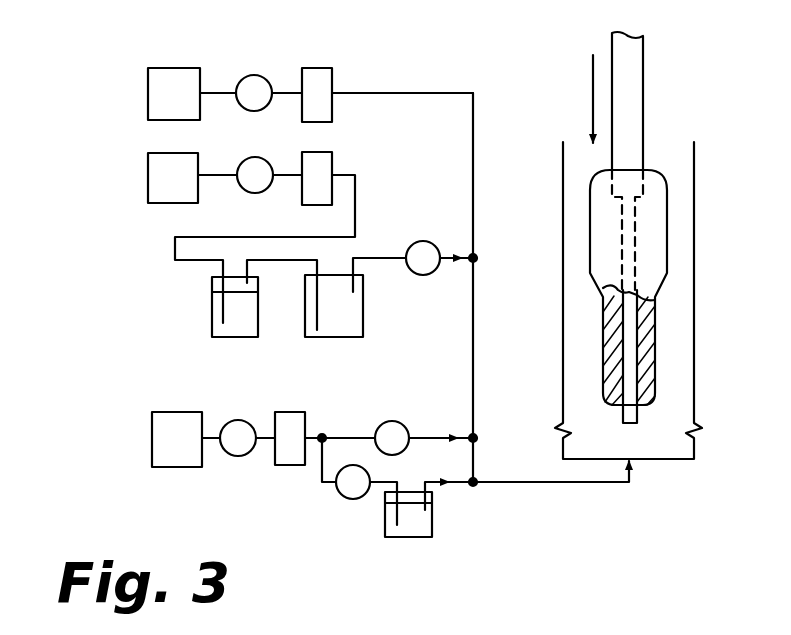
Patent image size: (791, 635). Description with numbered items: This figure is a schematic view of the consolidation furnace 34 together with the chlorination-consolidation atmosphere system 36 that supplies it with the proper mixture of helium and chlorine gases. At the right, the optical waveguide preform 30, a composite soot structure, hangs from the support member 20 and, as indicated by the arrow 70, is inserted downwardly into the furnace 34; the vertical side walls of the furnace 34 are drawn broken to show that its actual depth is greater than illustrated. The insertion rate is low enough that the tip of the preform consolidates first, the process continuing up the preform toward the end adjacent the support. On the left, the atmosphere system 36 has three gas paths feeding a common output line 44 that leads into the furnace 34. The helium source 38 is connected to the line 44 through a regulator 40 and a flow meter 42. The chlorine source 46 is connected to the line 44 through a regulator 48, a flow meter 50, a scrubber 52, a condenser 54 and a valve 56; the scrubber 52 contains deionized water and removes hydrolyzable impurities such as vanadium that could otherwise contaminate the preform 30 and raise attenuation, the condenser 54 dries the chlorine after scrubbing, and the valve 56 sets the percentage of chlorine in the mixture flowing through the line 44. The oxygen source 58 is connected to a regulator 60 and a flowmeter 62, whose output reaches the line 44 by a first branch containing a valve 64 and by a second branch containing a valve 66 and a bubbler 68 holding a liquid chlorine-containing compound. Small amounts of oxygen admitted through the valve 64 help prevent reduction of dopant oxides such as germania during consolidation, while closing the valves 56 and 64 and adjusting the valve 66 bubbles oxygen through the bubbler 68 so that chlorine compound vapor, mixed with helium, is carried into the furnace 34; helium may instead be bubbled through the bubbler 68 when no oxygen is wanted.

The support member 20 is at (635, 64).
The optical waveguide preform 30 is at (670, 212).
The consolidation furnace 34 is at (694, 364).
The chlorination-consolidation atmosphere system 36 is at (400, 78).
The helium source 38 is at (166, 68).
The regulator 40 is at (254, 75).
The flow meter 42 is at (318, 68).
The output line 44 is at (474, 238).
The chlorine source 46 is at (148, 176).
The regulator 48 is at (254, 157).
The flow meter 50 is at (332, 158).
The scrubber 52 is at (212, 322).
The condenser 54 is at (363, 337).
The valve 56 is at (422, 240).
The oxygen source 58 is at (172, 470).
The regulator 60 is at (238, 457).
The flowmeter 62 is at (286, 466).
The valve 64 is at (393, 421).
The valve 66 is at (345, 494).
The bubbler 68 is at (433, 517).
The arrow 70 is at (592, 90).